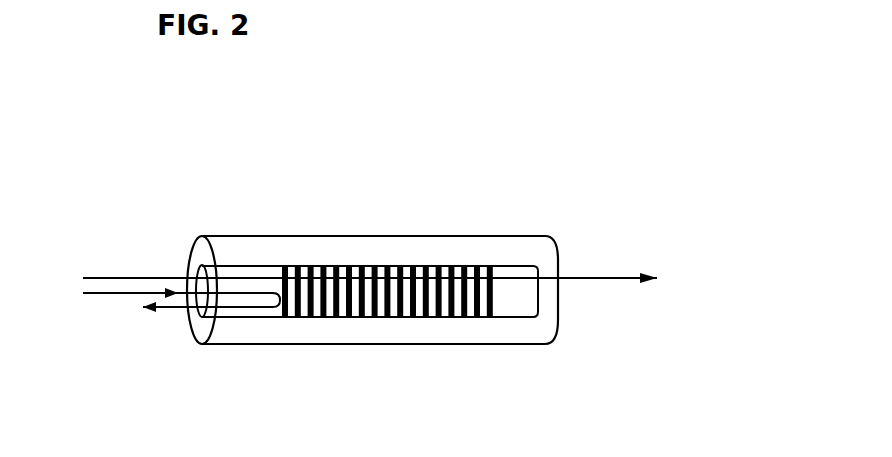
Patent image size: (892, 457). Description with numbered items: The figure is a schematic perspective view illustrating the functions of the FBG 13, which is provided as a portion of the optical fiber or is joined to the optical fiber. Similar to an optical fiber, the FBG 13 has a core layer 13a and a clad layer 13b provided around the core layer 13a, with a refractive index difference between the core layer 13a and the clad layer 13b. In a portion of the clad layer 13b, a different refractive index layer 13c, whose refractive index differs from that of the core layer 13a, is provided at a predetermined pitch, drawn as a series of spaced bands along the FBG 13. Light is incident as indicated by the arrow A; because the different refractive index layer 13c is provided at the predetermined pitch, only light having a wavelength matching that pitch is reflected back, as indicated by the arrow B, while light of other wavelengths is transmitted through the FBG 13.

The FBG 13 is at (100, 142).
The core layer 13a is at (243, 263).
The clad layer 13b is at (390, 236).
The different refractive index layer 13c is at (328, 263).
The arrow A is at (113, 277).
The arrow B is at (173, 308).